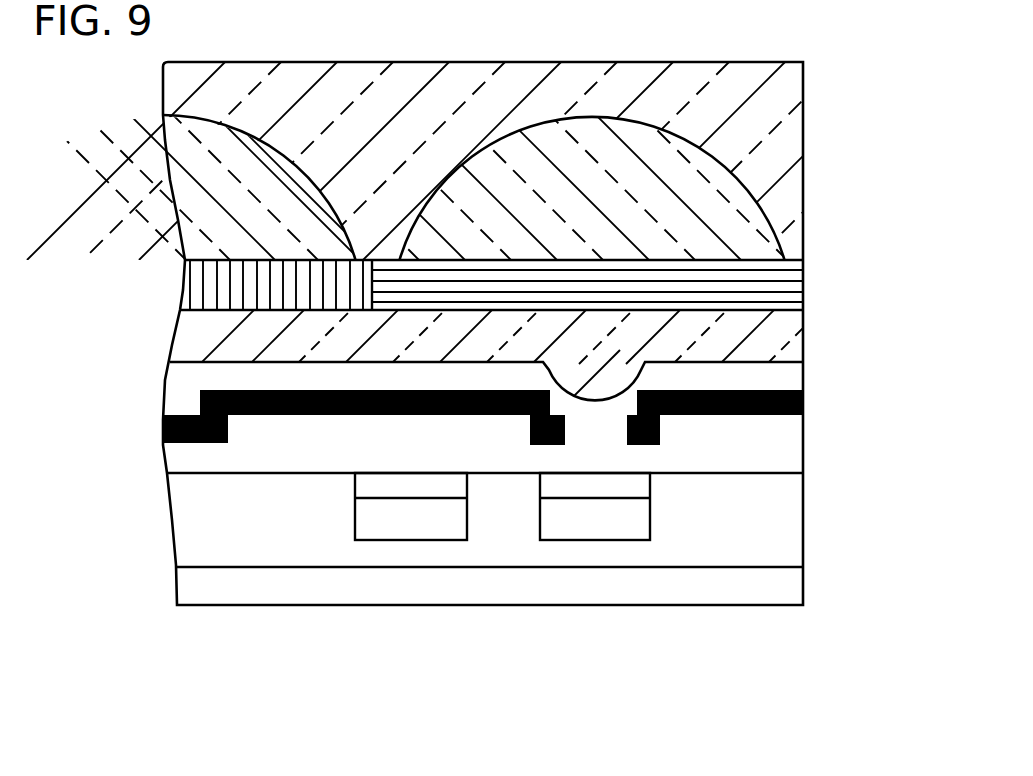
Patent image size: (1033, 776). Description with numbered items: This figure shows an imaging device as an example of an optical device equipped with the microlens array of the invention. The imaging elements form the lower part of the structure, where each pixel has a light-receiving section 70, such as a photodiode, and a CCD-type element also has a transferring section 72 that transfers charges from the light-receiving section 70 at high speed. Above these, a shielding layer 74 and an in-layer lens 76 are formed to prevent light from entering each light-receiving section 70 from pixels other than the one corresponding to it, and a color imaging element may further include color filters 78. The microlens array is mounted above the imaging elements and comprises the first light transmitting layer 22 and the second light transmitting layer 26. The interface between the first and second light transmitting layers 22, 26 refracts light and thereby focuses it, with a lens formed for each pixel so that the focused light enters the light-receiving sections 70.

The second light transmitting layer 26 is at (788, 125).
The first light transmitting layer 22 is at (780, 197).
The color filters 78 is at (800, 282).
The in-layer lens 76 is at (788, 333).
The shielding layer 74 is at (805, 400).
The transferring sections 72 is at (400, 543).
The light-receiving sections 70 is at (596, 542).